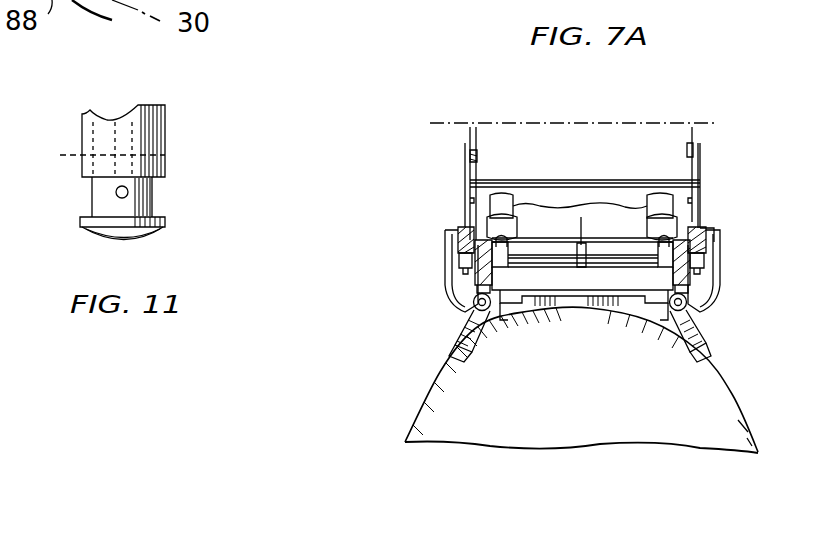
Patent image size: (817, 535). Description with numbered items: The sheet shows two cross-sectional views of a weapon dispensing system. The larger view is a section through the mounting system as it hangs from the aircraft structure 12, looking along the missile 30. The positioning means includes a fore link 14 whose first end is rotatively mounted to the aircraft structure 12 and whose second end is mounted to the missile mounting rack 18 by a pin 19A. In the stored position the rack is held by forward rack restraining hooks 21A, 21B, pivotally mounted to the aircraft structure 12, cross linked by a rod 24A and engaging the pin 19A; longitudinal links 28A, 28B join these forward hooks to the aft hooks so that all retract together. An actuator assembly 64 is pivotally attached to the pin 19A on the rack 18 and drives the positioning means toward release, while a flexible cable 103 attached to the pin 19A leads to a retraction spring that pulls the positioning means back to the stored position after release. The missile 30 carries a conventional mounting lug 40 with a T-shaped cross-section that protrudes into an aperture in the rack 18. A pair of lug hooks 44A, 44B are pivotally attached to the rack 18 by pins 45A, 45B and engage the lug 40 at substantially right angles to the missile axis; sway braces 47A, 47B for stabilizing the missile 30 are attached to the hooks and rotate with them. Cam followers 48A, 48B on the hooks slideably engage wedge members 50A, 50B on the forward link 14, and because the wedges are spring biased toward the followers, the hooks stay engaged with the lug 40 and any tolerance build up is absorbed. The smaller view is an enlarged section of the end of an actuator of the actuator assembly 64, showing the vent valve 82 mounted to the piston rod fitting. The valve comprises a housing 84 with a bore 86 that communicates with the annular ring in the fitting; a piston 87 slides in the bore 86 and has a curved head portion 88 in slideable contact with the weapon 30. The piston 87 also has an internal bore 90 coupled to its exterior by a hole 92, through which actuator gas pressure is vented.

In FIG. 7A, the aircraft structure 12 is at (710, 122).
In FIG. 7A, the fore link 14 is at (704, 228).
In FIG. 7A, the missile mounting rack 18 is at (452, 276).
In FIG. 7A, the pin 19A is at (620, 296).
In FIG. 7A, the forward rack restraining hook 21A is at (700, 155).
In FIG. 7A, the forward rack restraining hook 21B is at (470, 172).
In FIG. 7A, the rod 24A is at (668, 178).
In FIG. 7A, the longitudinal link 28A is at (702, 200).
In FIG. 7A, the longitudinal link 28B is at (472, 200).
In FIG. 7A, the missile 30 is at (743, 409).
In FIG. 7A, the mounting lug 40 is at (585, 308).
In FIG. 7A, the lug hook 44A is at (722, 290).
In FIG. 7A, the lug hook 44B is at (440, 292).
In FIG. 7A, the pin 45A is at (692, 298).
In FIG. 7A, the pin 45B is at (440, 320).
In FIG. 7A, the sway brace 47A is at (708, 348).
In FIG. 7A, the sway brace 47B is at (455, 356).
In FIG. 7A, the cam follower 48A is at (716, 240).
In FIG. 7A, the cam follower 48B is at (452, 238).
In FIG. 7A, the wedge member 50A is at (716, 256).
In FIG. 7A, the wedge member 50B is at (455, 250).
In FIG. 7A, the actuator assembly 64 is at (608, 218).
In FIG. 7A, the flexible cable 103 is at (573, 223).
In FIG. 11, the vent valve 82 is at (166, 156).
In FIG. 11, the housing 84 is at (166, 118).
In FIG. 11, the bore 86 is at (96, 136).
In FIG. 11, the piston 87 is at (153, 192).
In FIG. 11, the curved head portion 88 is at (152, 237).
In FIG. 11, the internal bore 90 is at (62, 155).
In FIG. 11, the hole 92 is at (116, 192).